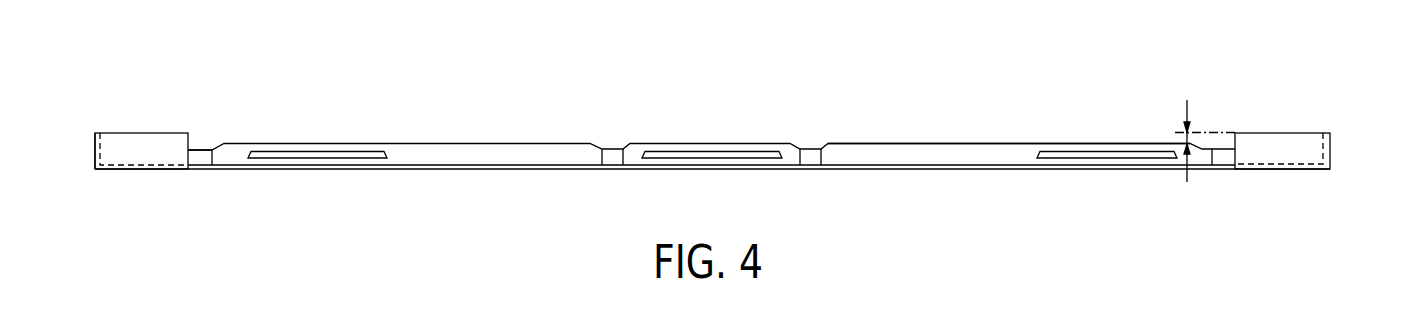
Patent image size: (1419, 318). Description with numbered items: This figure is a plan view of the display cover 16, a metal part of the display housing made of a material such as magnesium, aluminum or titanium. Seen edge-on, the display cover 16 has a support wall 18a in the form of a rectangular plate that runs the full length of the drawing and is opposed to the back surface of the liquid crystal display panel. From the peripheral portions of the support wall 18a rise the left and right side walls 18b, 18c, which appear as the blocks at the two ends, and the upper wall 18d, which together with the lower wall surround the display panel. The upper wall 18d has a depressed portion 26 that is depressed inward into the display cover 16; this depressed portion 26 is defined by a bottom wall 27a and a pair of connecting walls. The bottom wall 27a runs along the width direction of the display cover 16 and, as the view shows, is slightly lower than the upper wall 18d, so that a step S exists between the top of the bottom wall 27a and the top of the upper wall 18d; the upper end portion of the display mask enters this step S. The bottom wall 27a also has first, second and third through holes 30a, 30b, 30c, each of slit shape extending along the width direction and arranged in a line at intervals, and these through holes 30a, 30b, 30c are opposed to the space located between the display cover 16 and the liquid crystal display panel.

The display cover 16 is at (484, 170).
The support wall 18a is at (920, 170).
The side wall 18b is at (1330, 150).
The side wall 18c is at (93, 148).
The upper wall 18d is at (147, 141).
The depressed portion 26 is at (200, 166).
The bottom wall 27a is at (952, 148).
The first through hole 30a is at (1103, 158).
The second through hole 30b is at (712, 158).
The third through hole 30c is at (325, 158).
The step S is at (1176, 132).